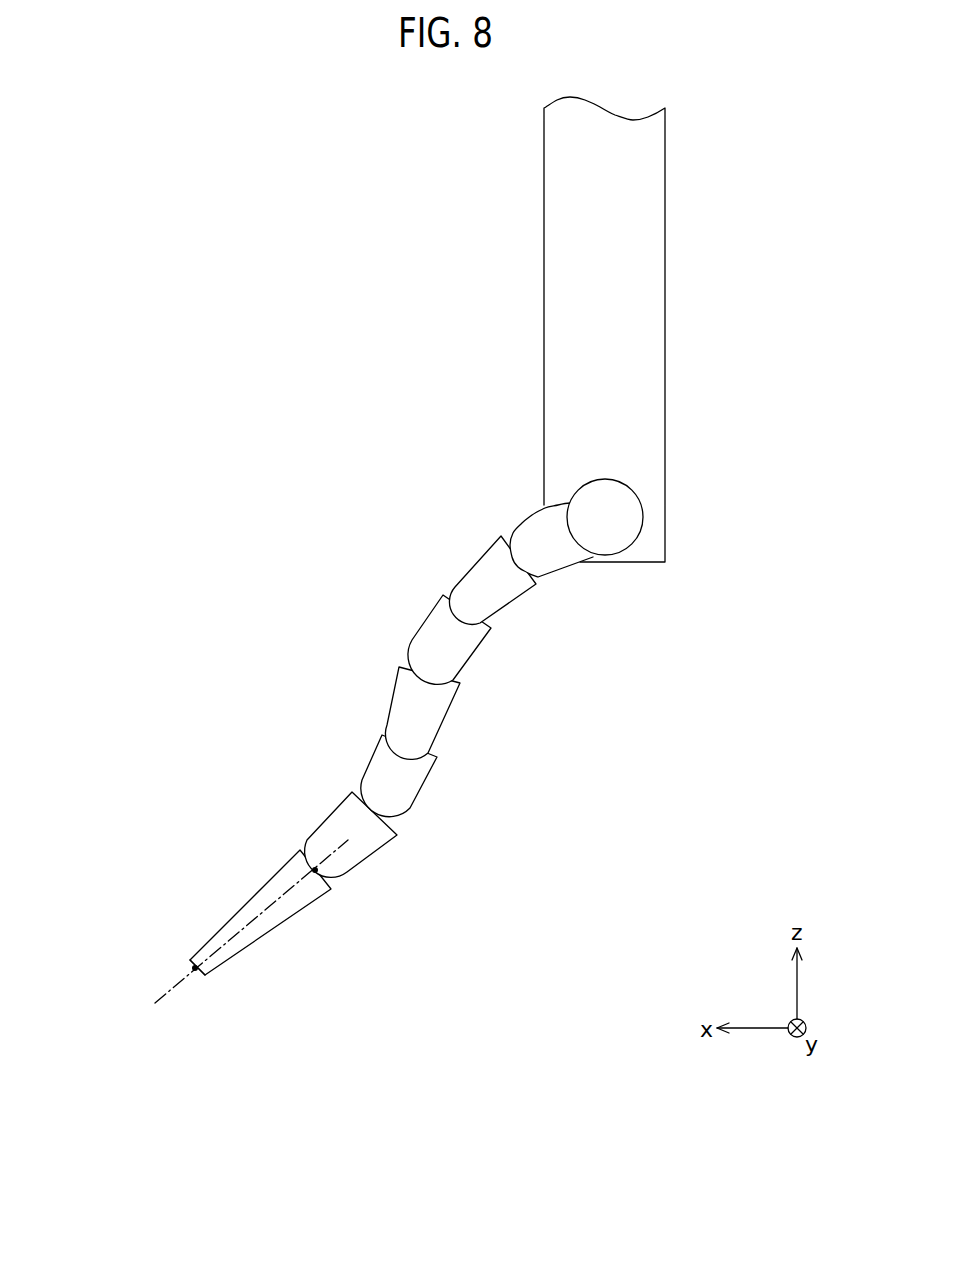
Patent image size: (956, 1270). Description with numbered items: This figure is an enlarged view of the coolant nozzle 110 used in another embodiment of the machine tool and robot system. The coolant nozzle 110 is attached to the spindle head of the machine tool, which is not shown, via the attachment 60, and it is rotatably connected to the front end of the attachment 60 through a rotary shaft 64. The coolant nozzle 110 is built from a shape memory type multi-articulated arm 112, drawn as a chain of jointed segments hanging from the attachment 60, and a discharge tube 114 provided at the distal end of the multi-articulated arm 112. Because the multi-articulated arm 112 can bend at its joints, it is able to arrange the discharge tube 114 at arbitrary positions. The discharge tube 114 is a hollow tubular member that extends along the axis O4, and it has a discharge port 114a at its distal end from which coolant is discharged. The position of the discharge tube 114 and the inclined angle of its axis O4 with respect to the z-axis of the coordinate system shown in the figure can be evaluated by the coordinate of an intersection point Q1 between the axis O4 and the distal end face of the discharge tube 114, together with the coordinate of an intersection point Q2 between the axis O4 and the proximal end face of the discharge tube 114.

The attachment 60 is at (570, 307).
The rotary shaft 64 is at (622, 505).
The coolant nozzle 110 is at (510, 789).
The multi-articulated arm 112 is at (400, 698).
The discharge tube 114 is at (211, 888).
The discharge port 114a is at (187, 960).
The intersection point Q1 is at (195, 968).
The intersection point Q2 is at (315, 870).
The axis O4 is at (167, 995).